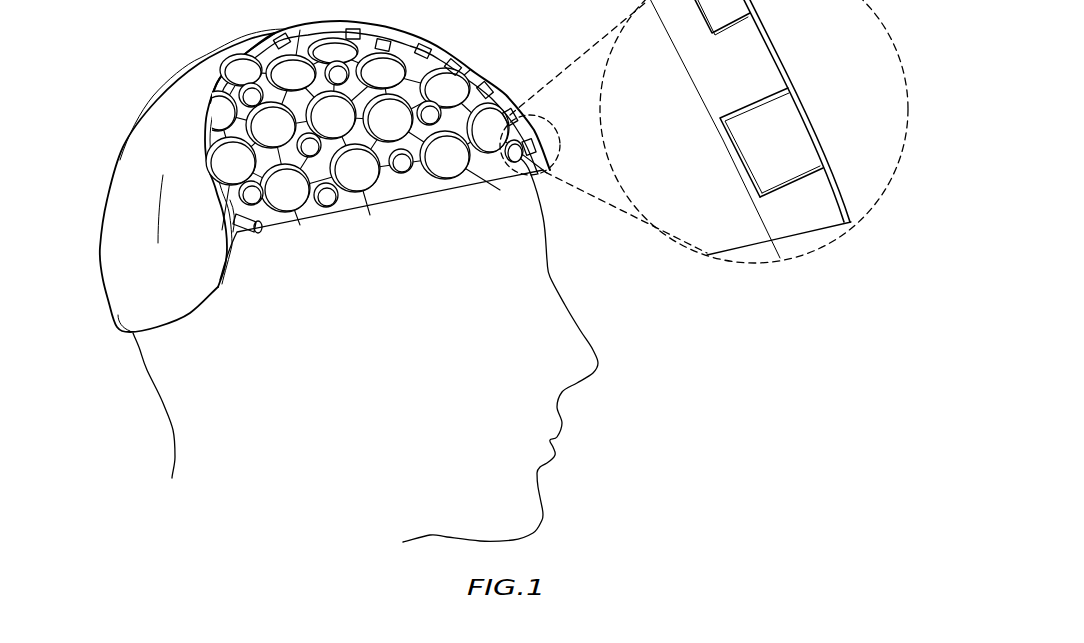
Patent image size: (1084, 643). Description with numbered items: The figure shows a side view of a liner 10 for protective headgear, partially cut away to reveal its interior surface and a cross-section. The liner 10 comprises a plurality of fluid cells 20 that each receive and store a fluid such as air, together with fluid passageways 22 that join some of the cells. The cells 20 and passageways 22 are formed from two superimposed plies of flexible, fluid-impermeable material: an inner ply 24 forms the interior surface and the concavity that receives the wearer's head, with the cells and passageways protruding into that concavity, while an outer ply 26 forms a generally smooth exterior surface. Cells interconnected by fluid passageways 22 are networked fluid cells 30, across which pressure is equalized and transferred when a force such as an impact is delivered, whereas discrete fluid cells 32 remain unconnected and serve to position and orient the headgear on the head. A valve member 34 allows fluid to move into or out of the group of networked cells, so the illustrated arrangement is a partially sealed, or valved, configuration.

The liner 10 is at (180, 330).
The fluid cells 20 is at (272, 216).
The fluid passageways 22 is at (476, 147).
The inner ply 24 is at (793, 186).
The outer ply 26 is at (177, 282).
The networked fluid cells 30 is at (452, 176).
The discrete fluid cells 32 is at (335, 201).
The valve member 34 is at (238, 236).